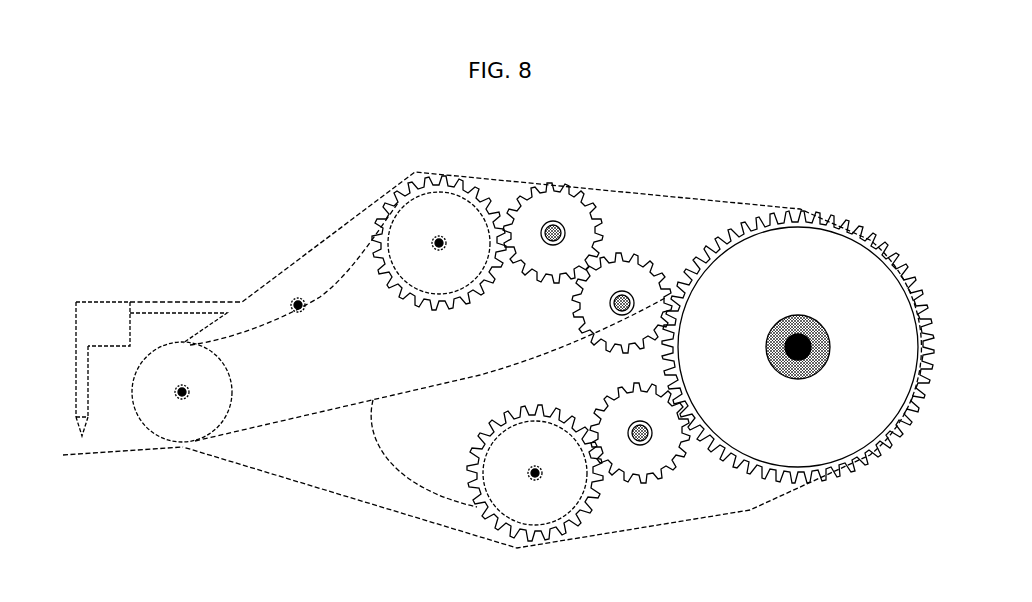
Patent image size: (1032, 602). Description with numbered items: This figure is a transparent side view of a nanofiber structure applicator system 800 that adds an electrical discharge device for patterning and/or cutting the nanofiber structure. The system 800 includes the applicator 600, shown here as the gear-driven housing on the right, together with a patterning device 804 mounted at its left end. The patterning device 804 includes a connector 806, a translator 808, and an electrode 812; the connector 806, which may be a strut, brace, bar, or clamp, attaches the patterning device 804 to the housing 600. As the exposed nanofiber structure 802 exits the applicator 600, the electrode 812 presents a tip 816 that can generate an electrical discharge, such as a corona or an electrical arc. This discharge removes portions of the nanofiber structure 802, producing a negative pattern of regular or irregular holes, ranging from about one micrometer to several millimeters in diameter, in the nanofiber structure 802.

The nanofiber structure applicator system 800 is at (300, 138).
The applicator 600 is at (332, 231).
The exposed nanofiber structure 802 is at (90, 457).
The patterning device 804 is at (82, 280).
The connector 806 is at (182, 302).
The translator 808 is at (76, 342).
The electrode 812 is at (56, 384).
The tip 816 is at (79, 439).